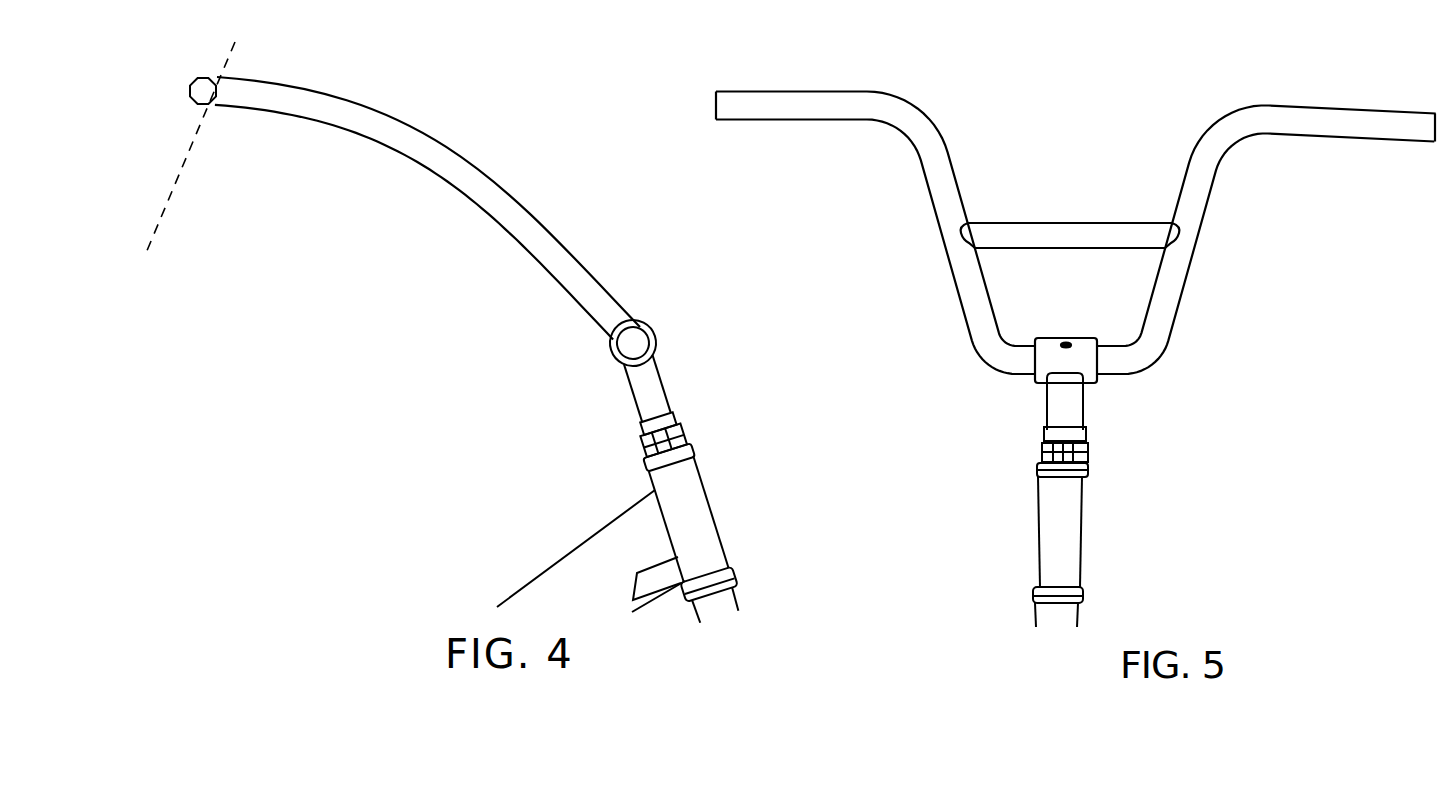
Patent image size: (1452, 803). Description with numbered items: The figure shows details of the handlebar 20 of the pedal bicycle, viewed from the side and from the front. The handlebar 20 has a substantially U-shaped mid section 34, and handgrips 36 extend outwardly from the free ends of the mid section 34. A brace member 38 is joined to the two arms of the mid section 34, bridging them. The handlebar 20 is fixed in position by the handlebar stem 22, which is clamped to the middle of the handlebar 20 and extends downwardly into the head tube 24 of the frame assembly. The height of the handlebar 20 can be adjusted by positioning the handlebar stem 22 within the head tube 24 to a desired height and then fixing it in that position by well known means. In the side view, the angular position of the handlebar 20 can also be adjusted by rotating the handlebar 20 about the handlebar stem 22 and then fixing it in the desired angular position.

In FIG. 4, the handlebar 20 is at (758, 67).
In FIG. 4, the handlebar stem 22 is at (667, 392).
In FIG. 5, the handlebar stem 22 is at (1083, 413).
In FIG. 4, the head tube 24 is at (718, 528).
In FIG. 5, the head tube 24 is at (1083, 540).
In FIG. 5, the mid section 34 is at (1076, 217).
In FIG. 5, the handgrips 36 is at (800, 95).
In FIG. 5, the brace member 38 is at (1097, 222).